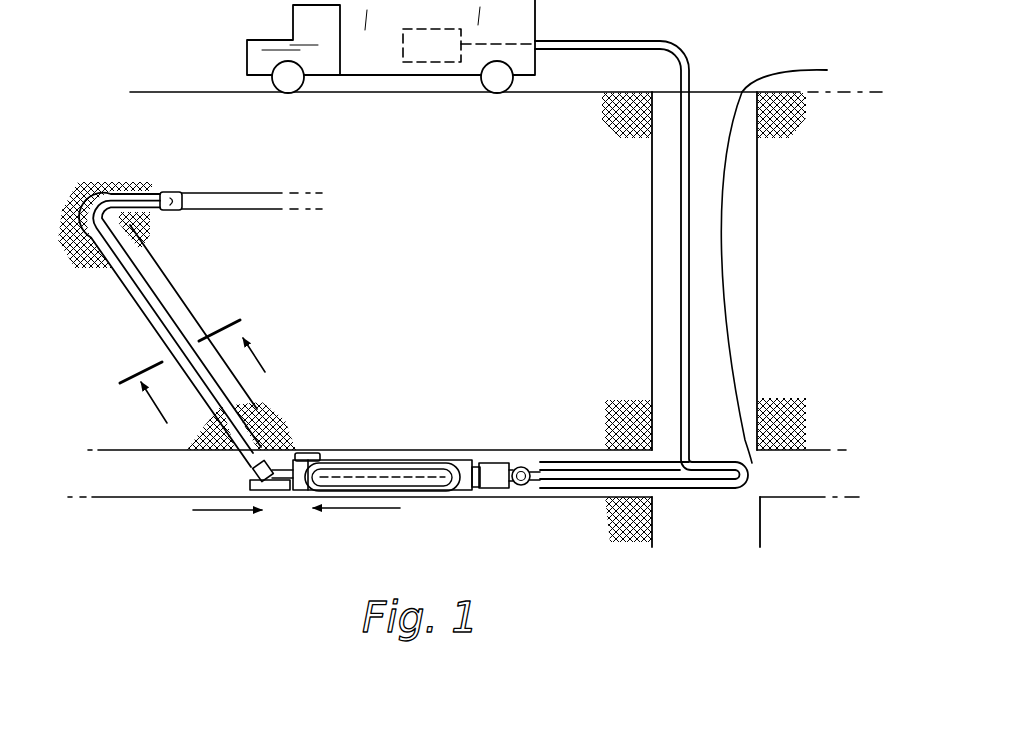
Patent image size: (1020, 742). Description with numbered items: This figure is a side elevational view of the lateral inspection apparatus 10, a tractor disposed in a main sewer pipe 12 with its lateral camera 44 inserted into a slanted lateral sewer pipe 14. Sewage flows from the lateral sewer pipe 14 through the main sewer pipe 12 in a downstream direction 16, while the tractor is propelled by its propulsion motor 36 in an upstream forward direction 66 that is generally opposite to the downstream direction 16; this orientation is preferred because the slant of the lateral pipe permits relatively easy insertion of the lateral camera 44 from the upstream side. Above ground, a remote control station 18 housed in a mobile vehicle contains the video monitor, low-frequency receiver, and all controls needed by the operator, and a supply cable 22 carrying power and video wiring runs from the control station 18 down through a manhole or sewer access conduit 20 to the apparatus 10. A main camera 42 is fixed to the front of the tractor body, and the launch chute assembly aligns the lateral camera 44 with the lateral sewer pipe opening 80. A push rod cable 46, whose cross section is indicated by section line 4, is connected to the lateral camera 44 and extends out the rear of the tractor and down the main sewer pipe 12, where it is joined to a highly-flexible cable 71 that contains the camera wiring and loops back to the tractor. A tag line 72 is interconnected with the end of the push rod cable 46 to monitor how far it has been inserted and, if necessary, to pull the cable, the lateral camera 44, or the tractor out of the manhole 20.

The lateral inspection apparatus 10 is at (490, 384).
The main sewer pipe 12 is at (157, 473).
The lateral sewer pipe 14 is at (268, 203).
The downstream direction 16 is at (222, 511).
The remote control station 18 is at (441, 62).
The manhole or sewer access conduit 20 is at (707, 252).
The supply cable 22 is at (689, 202).
The propulsion motor 36 is at (497, 462).
The main camera 42 is at (322, 456).
The lateral camera 44 is at (172, 200).
The push rod cable 46 is at (230, 400).
The forward direction 66 is at (400, 508).
The highly-flexible cable 71 is at (722, 490).
The tag line 72 is at (817, 70).
The lateral sewer pipe opening 80 is at (270, 452).
The section line 4- 4 is at (199, 375).